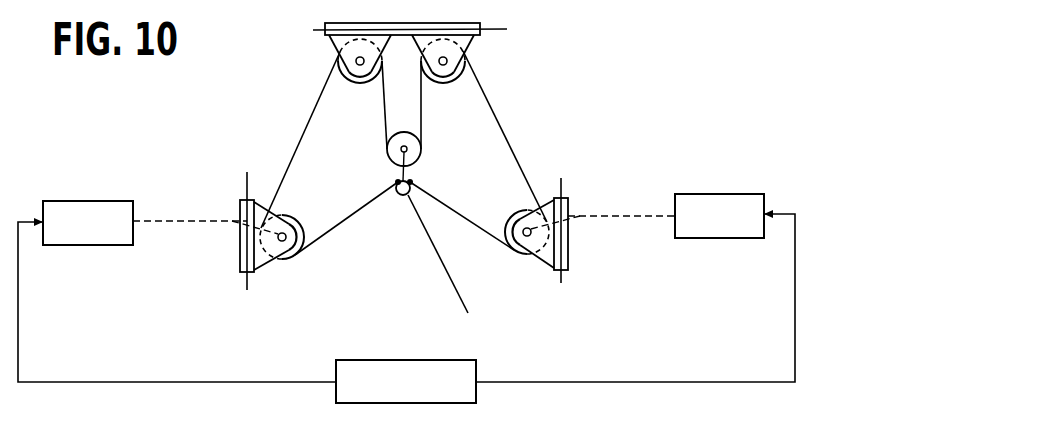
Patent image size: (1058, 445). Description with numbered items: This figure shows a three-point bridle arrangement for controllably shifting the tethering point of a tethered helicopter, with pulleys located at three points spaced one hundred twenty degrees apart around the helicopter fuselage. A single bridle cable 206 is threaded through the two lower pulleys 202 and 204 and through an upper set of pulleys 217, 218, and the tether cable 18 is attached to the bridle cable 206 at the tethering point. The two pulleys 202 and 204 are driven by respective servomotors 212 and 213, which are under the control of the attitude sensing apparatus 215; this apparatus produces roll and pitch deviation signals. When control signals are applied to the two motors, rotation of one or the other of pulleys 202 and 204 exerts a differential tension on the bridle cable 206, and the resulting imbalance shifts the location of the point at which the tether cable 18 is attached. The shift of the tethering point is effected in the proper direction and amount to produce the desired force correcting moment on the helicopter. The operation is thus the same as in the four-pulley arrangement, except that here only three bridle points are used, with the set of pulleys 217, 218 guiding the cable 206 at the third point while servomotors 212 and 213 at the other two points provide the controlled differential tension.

The tether cable 18 is at (434, 254).
The pulley 202 is at (521, 212).
The pulley 204 is at (287, 216).
The bridle cable 206 is at (497, 113).
The servomotor 212 is at (753, 193).
The servomotor 213 is at (75, 200).
The attitude sensing apparatus 215 is at (398, 359).
The pulley 217 is at (460, 66).
The pulley 218 is at (343, 66).